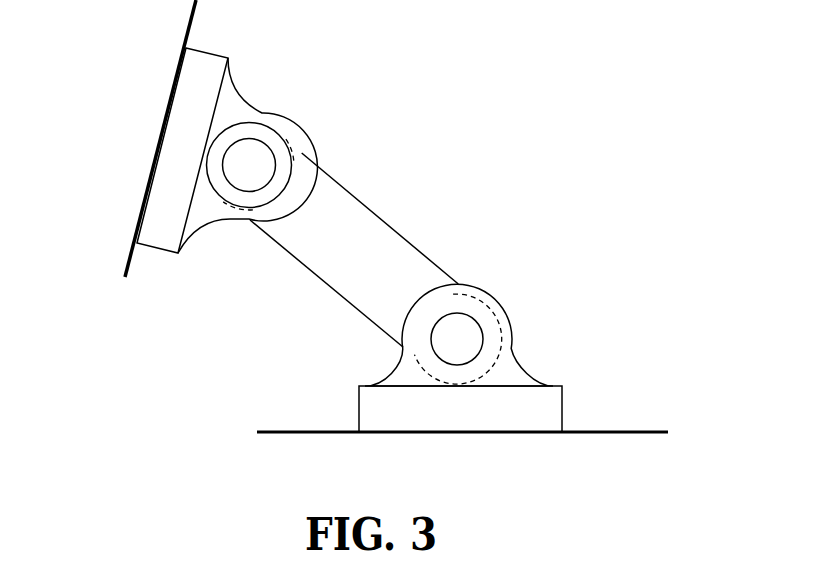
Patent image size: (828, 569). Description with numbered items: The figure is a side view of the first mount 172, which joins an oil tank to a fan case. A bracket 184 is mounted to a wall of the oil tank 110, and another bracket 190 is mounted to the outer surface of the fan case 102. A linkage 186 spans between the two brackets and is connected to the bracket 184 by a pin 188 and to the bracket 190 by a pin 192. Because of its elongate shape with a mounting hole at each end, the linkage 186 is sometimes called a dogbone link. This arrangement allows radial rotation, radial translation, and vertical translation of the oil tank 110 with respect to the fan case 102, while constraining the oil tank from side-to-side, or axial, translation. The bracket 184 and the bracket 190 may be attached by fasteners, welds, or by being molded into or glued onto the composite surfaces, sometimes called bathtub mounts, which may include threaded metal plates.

The fan case 102 is at (575, 433).
The oil tank 110 is at (130, 254).
The first mount 172 is at (527, 77).
The bracket 184 is at (245, 100).
The linkage 186 is at (350, 303).
The pin 188 is at (249, 165).
The bracket 190 is at (525, 365).
The pin 192 is at (457, 339).